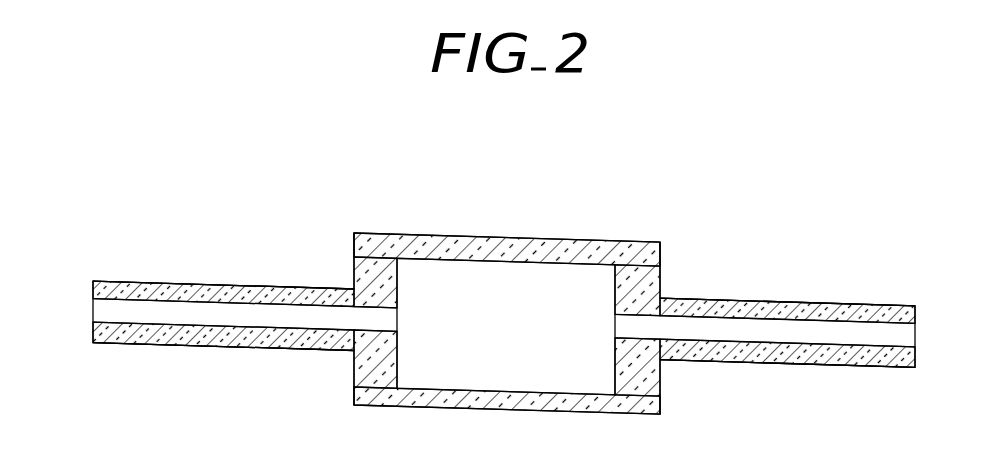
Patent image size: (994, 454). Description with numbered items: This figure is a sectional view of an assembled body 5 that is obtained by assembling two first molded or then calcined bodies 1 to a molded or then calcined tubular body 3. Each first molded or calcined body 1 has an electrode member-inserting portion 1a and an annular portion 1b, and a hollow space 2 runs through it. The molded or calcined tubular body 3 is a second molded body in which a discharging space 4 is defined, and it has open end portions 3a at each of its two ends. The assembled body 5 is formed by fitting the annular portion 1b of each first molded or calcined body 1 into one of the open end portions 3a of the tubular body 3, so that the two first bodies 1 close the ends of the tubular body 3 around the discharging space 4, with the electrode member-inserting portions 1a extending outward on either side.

The first molded or calcined body 1 is at (224, 272).
The electrode member-inserting portion 1a is at (143, 282).
The annular portion 1b is at (356, 262).
The hollow space 2 is at (187, 298).
The molded or calcined tubular body 3 is at (564, 228).
The open end portion 3a is at (354, 243).
The discharging space 4 is at (497, 270).
The assembled body 5 is at (772, 230).